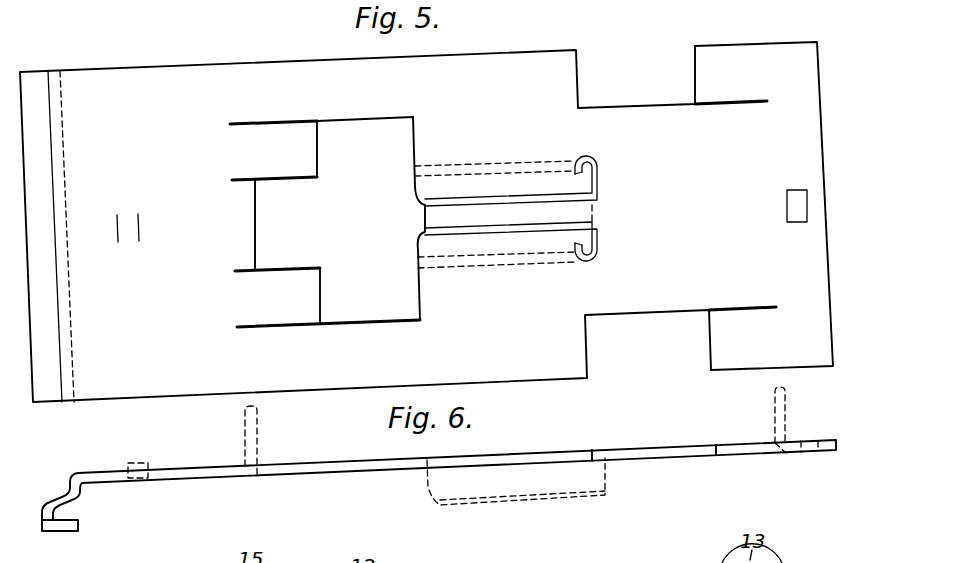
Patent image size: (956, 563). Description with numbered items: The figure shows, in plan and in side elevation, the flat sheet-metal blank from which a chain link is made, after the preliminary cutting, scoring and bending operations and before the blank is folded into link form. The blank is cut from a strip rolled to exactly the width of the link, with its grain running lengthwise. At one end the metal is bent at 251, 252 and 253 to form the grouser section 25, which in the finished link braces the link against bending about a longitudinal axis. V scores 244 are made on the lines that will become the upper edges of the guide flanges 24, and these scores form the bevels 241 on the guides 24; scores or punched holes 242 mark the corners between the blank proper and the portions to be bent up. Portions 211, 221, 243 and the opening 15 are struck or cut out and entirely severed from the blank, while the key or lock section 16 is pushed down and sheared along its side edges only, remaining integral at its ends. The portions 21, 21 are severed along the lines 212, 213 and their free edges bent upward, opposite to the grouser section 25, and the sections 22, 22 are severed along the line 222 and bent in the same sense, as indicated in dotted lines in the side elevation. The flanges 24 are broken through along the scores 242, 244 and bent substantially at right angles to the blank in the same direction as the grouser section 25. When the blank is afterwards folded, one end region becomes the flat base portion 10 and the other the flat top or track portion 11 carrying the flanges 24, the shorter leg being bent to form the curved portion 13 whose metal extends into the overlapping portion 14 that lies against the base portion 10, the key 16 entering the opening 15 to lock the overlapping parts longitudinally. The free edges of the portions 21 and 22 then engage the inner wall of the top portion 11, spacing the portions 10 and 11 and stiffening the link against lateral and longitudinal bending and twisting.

In FIG. 5, the base portion 10 is at (195, 382).
In FIG. 6, the base portion 10 is at (204, 473).
In FIG. 5, the top portion 11 is at (562, 372).
In FIG. 5, the curved portion 13 is at (633, 295).
In FIG. 6, the curved portion 13 is at (668, 452).
In FIG. 5, the overlapping portion 14 is at (820, 360).
In FIG. 5, the opening 15 is at (800, 178).
In FIG. 6, the opening 15 is at (809, 453).
In FIG. 5, the key 16 is at (128, 215).
In FIG. 6, the key 16 is at (142, 463).
In FIG. 5, the spacing portions 21 is at (313, 170).
In FIG. 6, the spacing portions 21 is at (260, 434).
In FIG. 5, the cut-out portion 211 is at (337, 218).
In FIG. 5, the severing line 212 is at (262, 125).
In FIG. 5, the severing line 213 is at (240, 180).
In FIG. 5, the spacing sections 22 is at (714, 57).
In FIG. 6, the spacing sections 22 is at (775, 413).
In FIG. 5, the cut-out portion 221 is at (650, 216).
In FIG. 5, the severing line 222 is at (737, 105).
In FIG. 5, the guide flanges 24 is at (427, 190).
In FIG. 6, the guide flanges 24 is at (540, 488).
In FIG. 6, the bevels 241 is at (600, 497).
In FIG. 5, the corner scores or holes 242 is at (595, 177).
In FIG. 5, the cut-out portion 243 is at (511, 208).
In FIG. 5, the V scores 244 is at (497, 200).
In FIG. 5, the grouser section 25 is at (42, 78).
In FIG. 6, the grouser section 25 is at (78, 502).
In FIG. 6, the grouser bend 251 is at (68, 482).
In FIG. 6, the grouser bend 252 is at (59, 498).
In FIG. 6, the grouser bend 253 is at (43, 530).